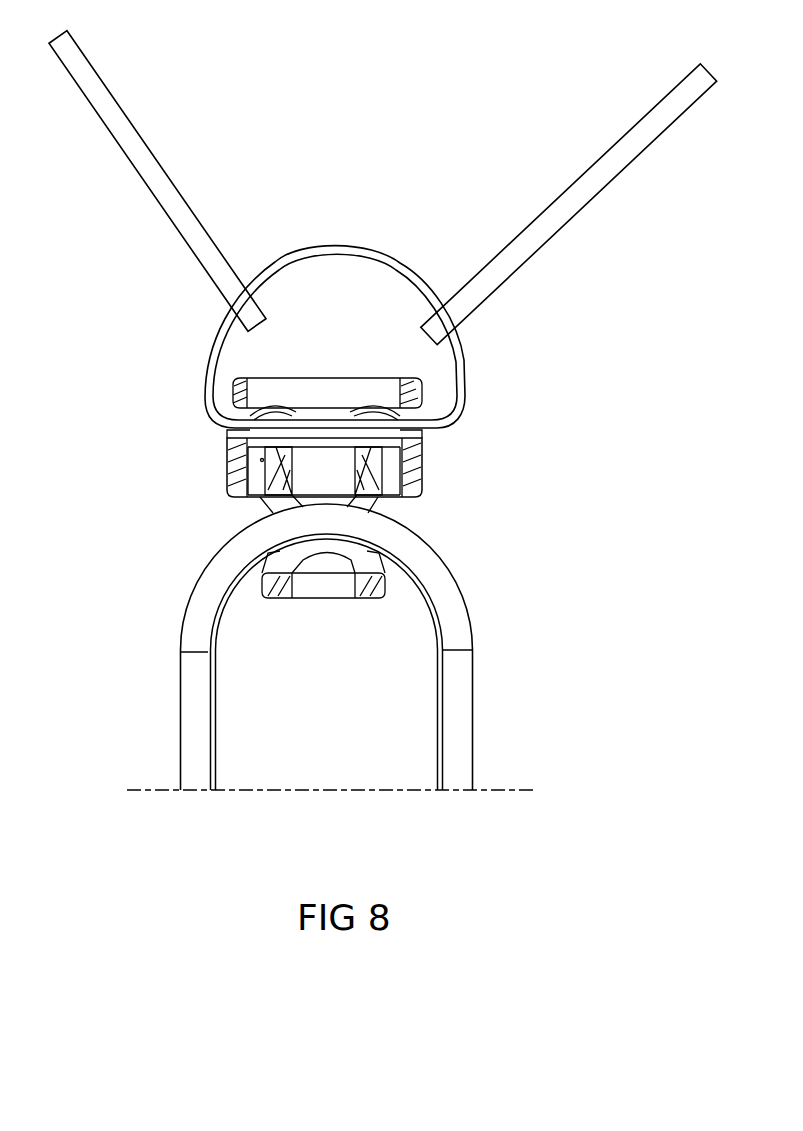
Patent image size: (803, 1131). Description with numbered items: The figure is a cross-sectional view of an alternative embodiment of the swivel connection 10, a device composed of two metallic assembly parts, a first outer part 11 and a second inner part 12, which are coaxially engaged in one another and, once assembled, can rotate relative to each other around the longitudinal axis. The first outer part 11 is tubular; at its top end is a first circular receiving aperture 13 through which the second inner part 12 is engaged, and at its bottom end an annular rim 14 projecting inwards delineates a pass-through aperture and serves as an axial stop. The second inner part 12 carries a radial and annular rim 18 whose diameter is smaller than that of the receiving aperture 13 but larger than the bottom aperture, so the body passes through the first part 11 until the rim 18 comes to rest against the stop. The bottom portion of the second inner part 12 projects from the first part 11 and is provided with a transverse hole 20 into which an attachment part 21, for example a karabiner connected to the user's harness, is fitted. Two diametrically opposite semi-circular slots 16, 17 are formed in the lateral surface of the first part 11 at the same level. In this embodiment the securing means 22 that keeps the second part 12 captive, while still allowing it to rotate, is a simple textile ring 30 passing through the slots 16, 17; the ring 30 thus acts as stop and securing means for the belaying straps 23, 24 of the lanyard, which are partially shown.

The swivel connection 10 is at (307, 494).
The first outer part 11 is at (423, 460).
The second inner part 12 is at (413, 497).
The first circular receiving aperture 13 is at (327, 351).
The annular rim 14 is at (243, 497).
The semi-circular slot 16 is at (227, 440).
The semi-circular slot 17 is at (427, 427).
The radial and annular rim 18 is at (242, 473).
The transverse hole 20 is at (323, 602).
The attachment part 21 is at (192, 694).
The securing means 22 is at (295, 309).
The belaying strap 23 is at (103, 107).
The belaying strap 24 is at (643, 138).
The textile ring 30 is at (420, 273).